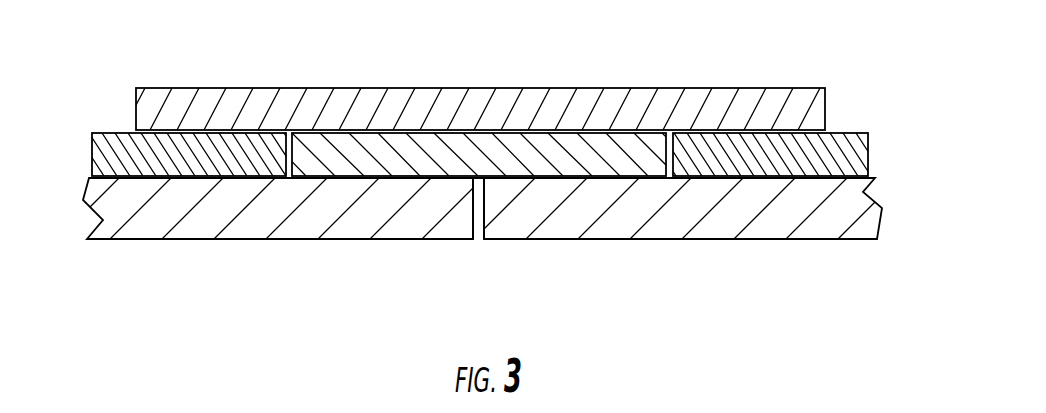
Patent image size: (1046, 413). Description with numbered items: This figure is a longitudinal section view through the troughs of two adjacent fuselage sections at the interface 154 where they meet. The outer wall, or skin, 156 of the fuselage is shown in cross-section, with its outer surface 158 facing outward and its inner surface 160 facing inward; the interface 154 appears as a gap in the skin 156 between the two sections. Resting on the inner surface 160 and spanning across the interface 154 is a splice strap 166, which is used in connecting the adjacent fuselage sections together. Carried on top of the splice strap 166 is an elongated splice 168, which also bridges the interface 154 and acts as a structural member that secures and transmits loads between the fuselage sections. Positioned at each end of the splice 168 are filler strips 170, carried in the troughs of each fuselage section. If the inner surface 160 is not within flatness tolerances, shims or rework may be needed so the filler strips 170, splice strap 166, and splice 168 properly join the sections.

The interface 154 is at (481, 252).
The outer wall 156 is at (872, 222).
The outer surface 158 is at (703, 238).
The inner surface 160 is at (873, 177).
The splice strap 166 is at (400, 147).
The splice 168 is at (820, 112).
The filler strips 170 is at (95, 148).